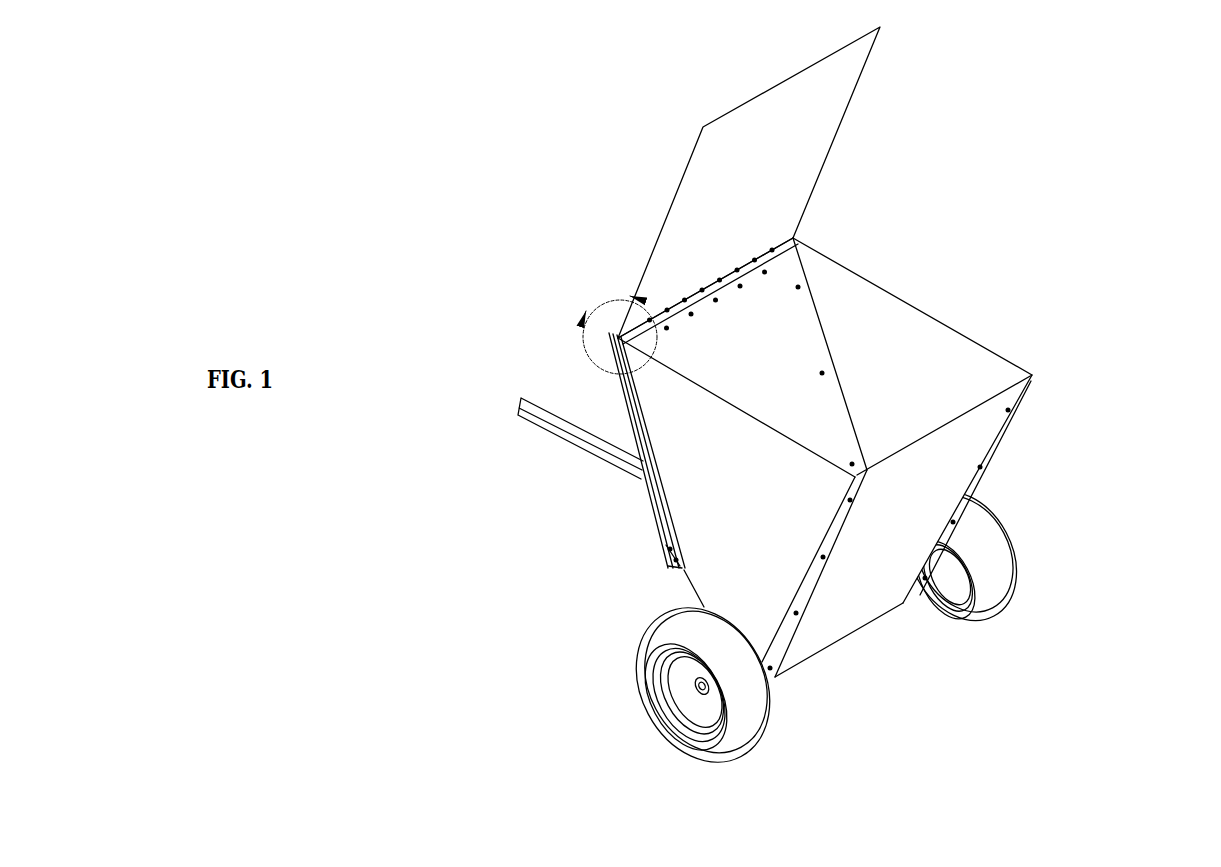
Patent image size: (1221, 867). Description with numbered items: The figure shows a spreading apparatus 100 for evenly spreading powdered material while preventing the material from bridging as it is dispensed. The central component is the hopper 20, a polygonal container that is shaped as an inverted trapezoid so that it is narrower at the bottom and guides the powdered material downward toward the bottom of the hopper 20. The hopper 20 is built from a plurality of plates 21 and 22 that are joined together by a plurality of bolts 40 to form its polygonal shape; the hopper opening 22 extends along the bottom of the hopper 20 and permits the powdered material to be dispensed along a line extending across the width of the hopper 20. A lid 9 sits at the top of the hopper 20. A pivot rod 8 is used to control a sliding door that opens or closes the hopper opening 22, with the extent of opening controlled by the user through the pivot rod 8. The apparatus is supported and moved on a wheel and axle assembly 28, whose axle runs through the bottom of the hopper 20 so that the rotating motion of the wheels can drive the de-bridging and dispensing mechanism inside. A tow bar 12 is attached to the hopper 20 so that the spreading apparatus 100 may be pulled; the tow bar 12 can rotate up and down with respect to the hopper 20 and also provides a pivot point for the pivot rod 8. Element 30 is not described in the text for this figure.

The spreading apparatus 100 is at (1125, 675).
The pivot rod 8 is at (606, 343).
The lid 9 is at (677, 193).
The tow bar 12 is at (516, 406).
The hopper 20 is at (978, 336).
The plate 21 is at (717, 398).
The plate 22 is at (835, 645).
The wheel and axle assembly 28 is at (666, 714).
The top rim fasteners 30 is at (729, 288).
The bolt 40 is at (802, 285).